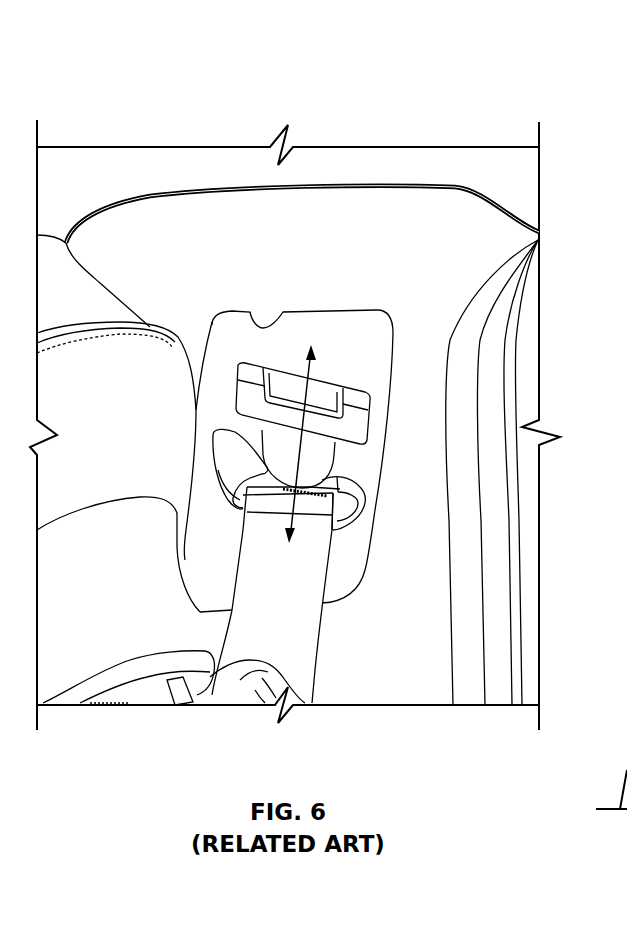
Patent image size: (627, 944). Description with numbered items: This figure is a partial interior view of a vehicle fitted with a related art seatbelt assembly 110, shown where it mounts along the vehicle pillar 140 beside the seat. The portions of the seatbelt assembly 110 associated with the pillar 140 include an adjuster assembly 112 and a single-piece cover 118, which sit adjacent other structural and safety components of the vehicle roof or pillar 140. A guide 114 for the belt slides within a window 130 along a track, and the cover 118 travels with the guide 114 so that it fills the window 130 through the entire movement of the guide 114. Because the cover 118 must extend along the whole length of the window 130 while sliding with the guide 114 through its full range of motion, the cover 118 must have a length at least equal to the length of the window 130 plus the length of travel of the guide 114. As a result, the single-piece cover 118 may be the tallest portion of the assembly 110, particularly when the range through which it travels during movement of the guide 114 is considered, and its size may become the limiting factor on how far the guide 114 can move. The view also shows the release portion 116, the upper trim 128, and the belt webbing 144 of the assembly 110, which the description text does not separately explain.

The seatbelt assembly 110 is at (430, 503).
The adjuster assembly 112 is at (372, 462).
The guide 114 is at (227, 447).
The release button 116 is at (312, 368).
The cover 118 is at (338, 332).
The upper trim 128 is at (415, 220).
The window 130 is at (300, 275).
The vehicle pillar 140 is at (468, 370).
The seat belt webbing 144 is at (300, 640).